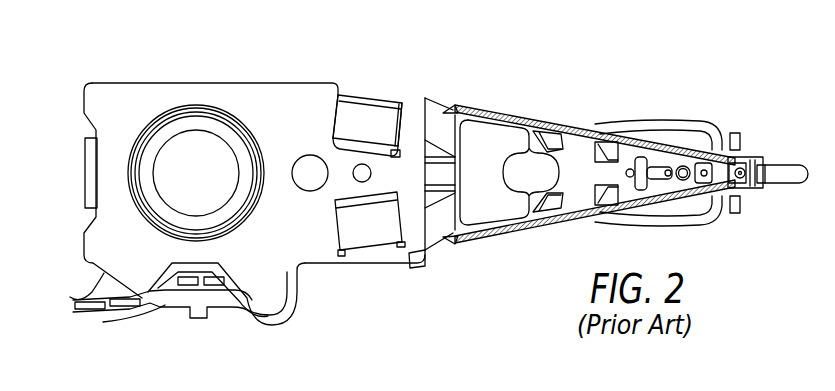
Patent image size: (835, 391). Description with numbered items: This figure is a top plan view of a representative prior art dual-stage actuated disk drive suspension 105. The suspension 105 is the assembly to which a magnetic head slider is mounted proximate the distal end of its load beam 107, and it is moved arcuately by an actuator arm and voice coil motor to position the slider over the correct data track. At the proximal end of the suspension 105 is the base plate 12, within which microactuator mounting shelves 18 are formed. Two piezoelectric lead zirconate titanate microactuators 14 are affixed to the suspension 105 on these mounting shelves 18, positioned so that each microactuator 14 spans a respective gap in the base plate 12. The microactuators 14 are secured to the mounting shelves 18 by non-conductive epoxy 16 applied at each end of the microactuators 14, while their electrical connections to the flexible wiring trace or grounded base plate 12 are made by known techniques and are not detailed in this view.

The base plate 12 is at (153, 290).
The microactuators 14 is at (364, 100).
The non-conductive epoxy 16 is at (343, 96).
The microactuator mounting shelves 18 is at (393, 151).
The disk drive suspension 105 is at (447, 72).
The load beam 107 is at (520, 118).